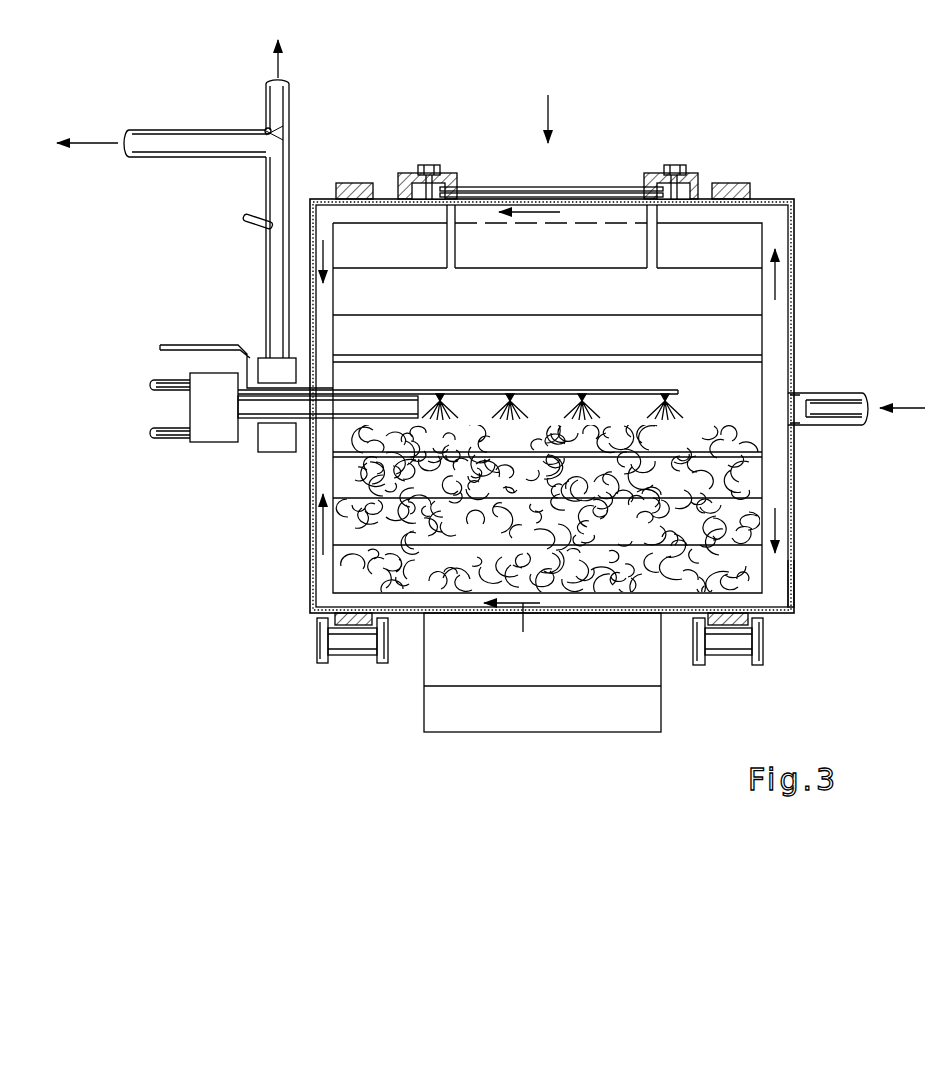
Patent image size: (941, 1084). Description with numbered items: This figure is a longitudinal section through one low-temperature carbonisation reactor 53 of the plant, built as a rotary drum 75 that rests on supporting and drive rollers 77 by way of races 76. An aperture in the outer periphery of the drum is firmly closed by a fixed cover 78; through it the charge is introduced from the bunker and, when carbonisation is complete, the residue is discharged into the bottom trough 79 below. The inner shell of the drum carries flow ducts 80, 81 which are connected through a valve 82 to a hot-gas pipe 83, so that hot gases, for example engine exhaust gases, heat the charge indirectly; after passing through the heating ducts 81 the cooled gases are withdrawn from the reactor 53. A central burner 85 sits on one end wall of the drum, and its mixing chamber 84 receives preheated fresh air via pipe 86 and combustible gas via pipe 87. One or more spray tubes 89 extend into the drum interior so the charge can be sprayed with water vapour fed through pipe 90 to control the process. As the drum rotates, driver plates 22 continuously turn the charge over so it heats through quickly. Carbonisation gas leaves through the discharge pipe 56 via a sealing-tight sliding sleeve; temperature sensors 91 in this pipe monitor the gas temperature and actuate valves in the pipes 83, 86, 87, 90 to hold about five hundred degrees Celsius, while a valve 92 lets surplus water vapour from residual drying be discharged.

The driver plates 22 is at (752, 292).
The low-temperature carbonisation reactor 53 is at (812, 240).
The discharge pipe 56 is at (184, 142).
The rotary drum 75 is at (794, 548).
The races 76 is at (727, 192).
The supporting and drive rollers 77 is at (350, 645).
The fixed cover 78 is at (517, 189).
The bottom trough 79 is at (438, 703).
The flow ducts 80 is at (780, 328).
The heating ducts 81 is at (388, 205).
The valve 82 is at (828, 405).
The hot-gas pipe 83 is at (848, 426).
The mixing chamber 84 is at (207, 430).
The central burner 85 is at (386, 400).
The pipe 86 is at (165, 440).
The pipe 87 is at (162, 380).
The spray tubes 89 is at (672, 392).
The pipe 90 is at (196, 345).
The temperature sensors 91 is at (262, 218).
The valve 92 is at (272, 129).